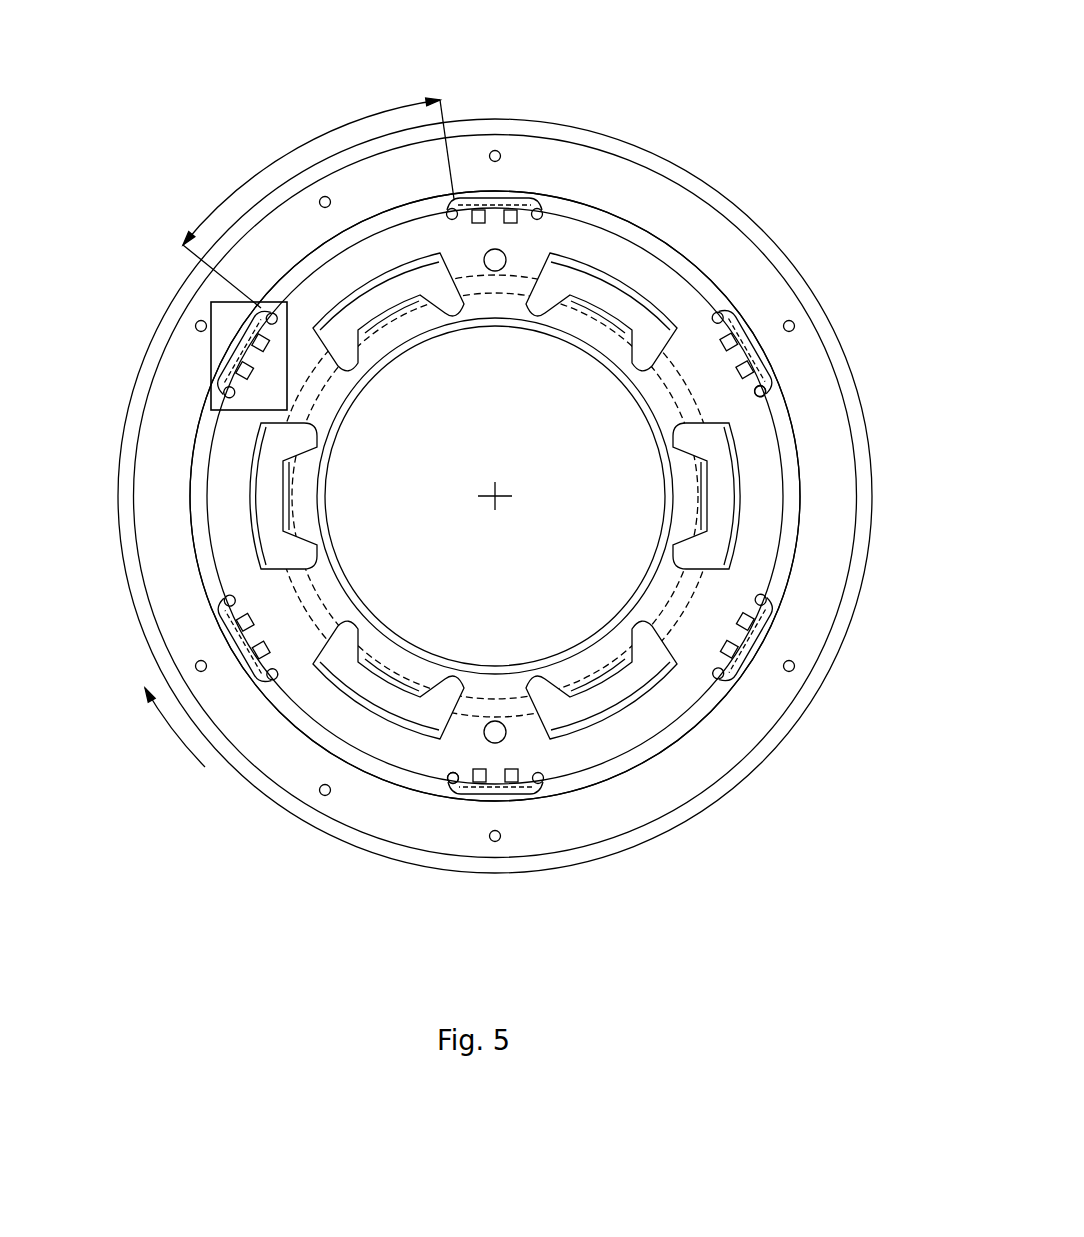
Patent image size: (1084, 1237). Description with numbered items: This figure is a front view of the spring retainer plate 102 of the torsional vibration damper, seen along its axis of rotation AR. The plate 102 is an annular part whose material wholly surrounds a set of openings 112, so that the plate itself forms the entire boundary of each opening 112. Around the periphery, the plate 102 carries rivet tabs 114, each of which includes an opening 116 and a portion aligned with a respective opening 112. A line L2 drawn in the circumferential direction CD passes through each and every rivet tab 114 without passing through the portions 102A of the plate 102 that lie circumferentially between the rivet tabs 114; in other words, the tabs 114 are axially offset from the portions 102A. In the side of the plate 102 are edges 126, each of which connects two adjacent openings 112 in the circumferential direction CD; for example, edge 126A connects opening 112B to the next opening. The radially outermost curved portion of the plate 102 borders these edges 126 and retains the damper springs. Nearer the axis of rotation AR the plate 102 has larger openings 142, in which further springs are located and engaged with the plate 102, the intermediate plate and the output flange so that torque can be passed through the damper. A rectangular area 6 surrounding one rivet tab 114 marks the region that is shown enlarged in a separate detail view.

The spring retainer plate 102 is at (740, 58).
The portions of plate 102A is at (267, 167).
The openings 142 is at (602, 295).
The rivet tabs 114 is at (748, 344).
The openings 112 is at (760, 390).
The opening 112B is at (455, 784).
The openings 116 is at (480, 780).
The edges 126 is at (665, 755).
The edge 126A is at (300, 732).
The area 6 is at (210, 350).
The line L2 is at (679, 724).
The axis of rotation AR is at (499, 498).
The circumferential direction CD is at (172, 732).